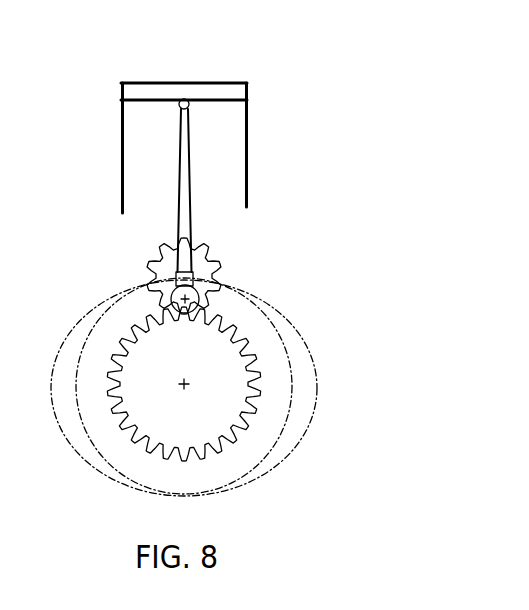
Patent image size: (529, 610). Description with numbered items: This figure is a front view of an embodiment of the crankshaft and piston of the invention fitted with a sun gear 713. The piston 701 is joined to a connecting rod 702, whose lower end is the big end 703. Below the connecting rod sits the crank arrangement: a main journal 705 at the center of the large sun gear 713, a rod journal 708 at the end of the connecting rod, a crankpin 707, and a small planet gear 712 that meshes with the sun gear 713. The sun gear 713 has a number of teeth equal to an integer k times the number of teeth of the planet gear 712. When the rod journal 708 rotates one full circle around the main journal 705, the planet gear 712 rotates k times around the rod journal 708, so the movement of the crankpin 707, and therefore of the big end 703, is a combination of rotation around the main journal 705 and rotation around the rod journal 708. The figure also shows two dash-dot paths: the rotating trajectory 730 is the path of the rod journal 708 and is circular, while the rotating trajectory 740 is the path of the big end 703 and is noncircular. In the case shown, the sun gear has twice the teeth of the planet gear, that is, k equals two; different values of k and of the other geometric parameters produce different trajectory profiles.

The piston 701 is at (159, 92).
The connecting rod 702 is at (289, 165).
The big end 703 is at (113, 294).
The main journal 705 is at (290, 442).
The crankpin 707 is at (260, 263).
The rod journal 708 is at (271, 226).
The planet gear 712 is at (94, 248).
The sun gear 713 is at (262, 384).
The rotating trajectory 730 is at (255, 386).
The rotating trajectory 740 is at (234, 372).